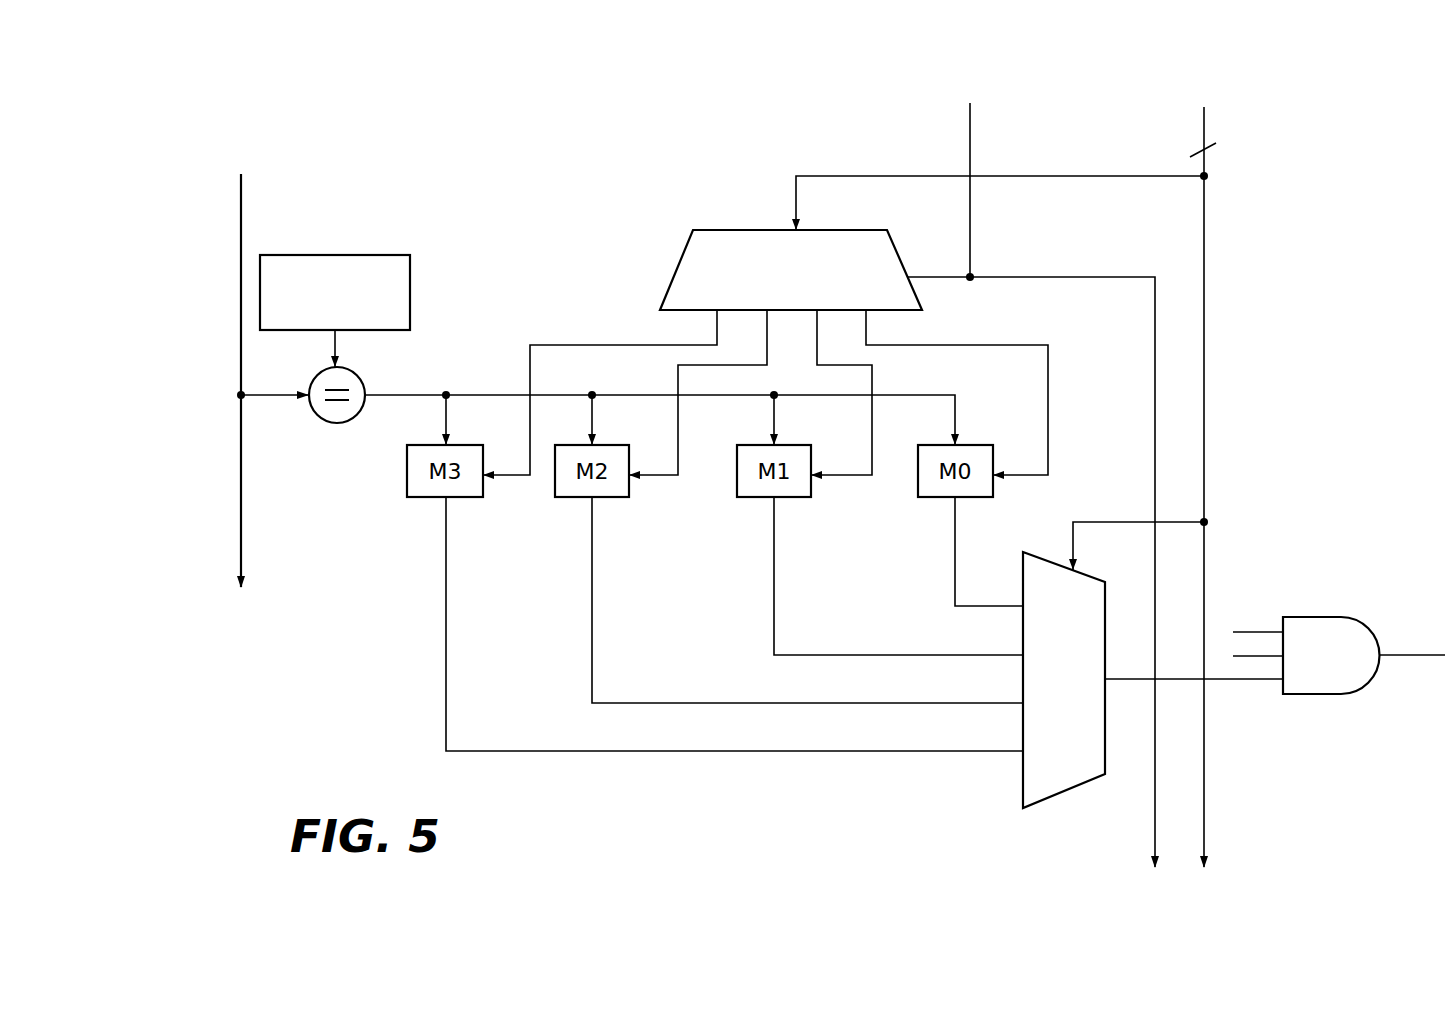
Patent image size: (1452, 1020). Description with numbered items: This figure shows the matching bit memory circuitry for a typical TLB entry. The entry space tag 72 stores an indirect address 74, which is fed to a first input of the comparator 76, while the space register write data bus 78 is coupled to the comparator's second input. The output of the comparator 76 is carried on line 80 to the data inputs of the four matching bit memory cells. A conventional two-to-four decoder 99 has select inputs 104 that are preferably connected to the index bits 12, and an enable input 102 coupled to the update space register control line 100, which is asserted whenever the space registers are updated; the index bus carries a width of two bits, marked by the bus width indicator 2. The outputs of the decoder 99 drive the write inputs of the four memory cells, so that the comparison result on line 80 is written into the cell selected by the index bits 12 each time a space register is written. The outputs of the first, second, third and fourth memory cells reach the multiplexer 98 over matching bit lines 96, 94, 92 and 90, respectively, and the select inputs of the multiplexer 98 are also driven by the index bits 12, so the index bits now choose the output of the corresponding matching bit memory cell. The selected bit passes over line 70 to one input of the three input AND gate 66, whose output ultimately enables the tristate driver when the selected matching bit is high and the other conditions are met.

The space register write data bus 78 is at (240, 240).
The entry space tag 72 is at (403, 255).
The indirect address 74 is at (332, 350).
The comparator 76 is at (337, 423).
The line 80 is at (400, 394).
The 2-to-4 decoder 99 is at (674, 262).
The select inputs 104 is at (795, 197).
The enable input 102 is at (938, 276).
The update space register control line 100 is at (1000, 118).
The index bits 12 is at (1202, 121).
The bus width indicator 2 is at (1214, 145).
The matching bit line 90 is at (447, 593).
The matching bit line 92 is at (593, 597).
The matching bit line 94 is at (775, 595).
The matching bit line 96 is at (953, 558).
The multiplexer 98 is at (1074, 790).
The line 70 is at (1244, 681).
The three input AND gate 66 is at (1320, 617).